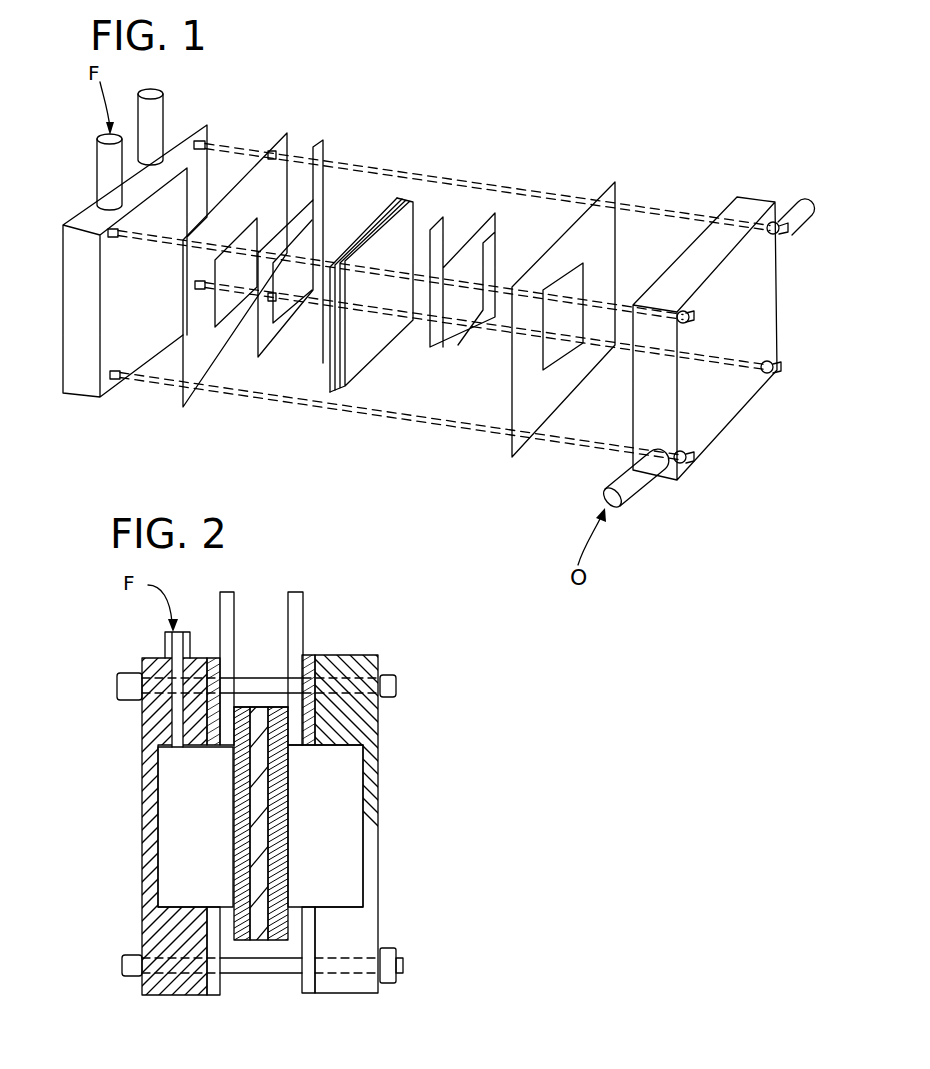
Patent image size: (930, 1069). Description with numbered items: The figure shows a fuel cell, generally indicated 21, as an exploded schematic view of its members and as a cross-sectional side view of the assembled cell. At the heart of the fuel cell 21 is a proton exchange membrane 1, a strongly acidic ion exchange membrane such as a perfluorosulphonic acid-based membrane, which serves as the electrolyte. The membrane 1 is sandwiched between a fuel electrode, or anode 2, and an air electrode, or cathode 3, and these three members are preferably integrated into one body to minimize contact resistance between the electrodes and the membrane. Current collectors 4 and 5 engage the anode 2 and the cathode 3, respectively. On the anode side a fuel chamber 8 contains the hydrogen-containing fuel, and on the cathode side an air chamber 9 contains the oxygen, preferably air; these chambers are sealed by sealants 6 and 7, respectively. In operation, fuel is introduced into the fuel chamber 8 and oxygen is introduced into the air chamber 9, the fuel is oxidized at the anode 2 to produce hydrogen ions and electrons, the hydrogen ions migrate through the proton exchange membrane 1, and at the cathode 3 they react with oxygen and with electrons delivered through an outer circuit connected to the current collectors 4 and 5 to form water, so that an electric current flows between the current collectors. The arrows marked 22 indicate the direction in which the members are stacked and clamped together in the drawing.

In FIG. 1, the proton exchange membrane 1 is at (340, 378).
In FIG. 2, the proton exchange membrane 1 is at (258, 943).
In FIG. 1, the anode 2 is at (330, 364).
In FIG. 2, the anode 2 is at (243, 943).
In FIG. 1, the cathode 3 is at (348, 358).
In FIG. 2, the cathode 3 is at (278, 943).
In FIG. 1, the current collector 4 is at (323, 143).
In FIG. 2, the current collector 4 is at (221, 610).
In FIG. 1, the current collector 5 is at (500, 228).
In FIG. 2, the current collector 5 is at (303, 613).
In FIG. 1, the sealant 6 is at (185, 404).
In FIG. 2, the sealant 6 is at (212, 997).
In FIG. 1, the sealant 7 is at (522, 434).
In FIG. 2, the sealant 7 is at (382, 730).
In FIG. 1, the fuel chamber 8 is at (127, 320).
In FIG. 2, the fuel chamber 8 is at (198, 845).
In FIG. 1, the air chamber 9 is at (752, 198).
In FIG. 2, the air chamber 9 is at (338, 847).
In FIG. 1, the fuel cell 21 is at (624, 130).
In FIG. 2, the fuel cell 21 is at (490, 683).
In FIG. 1, the clamping direction 22 is at (38, 336).